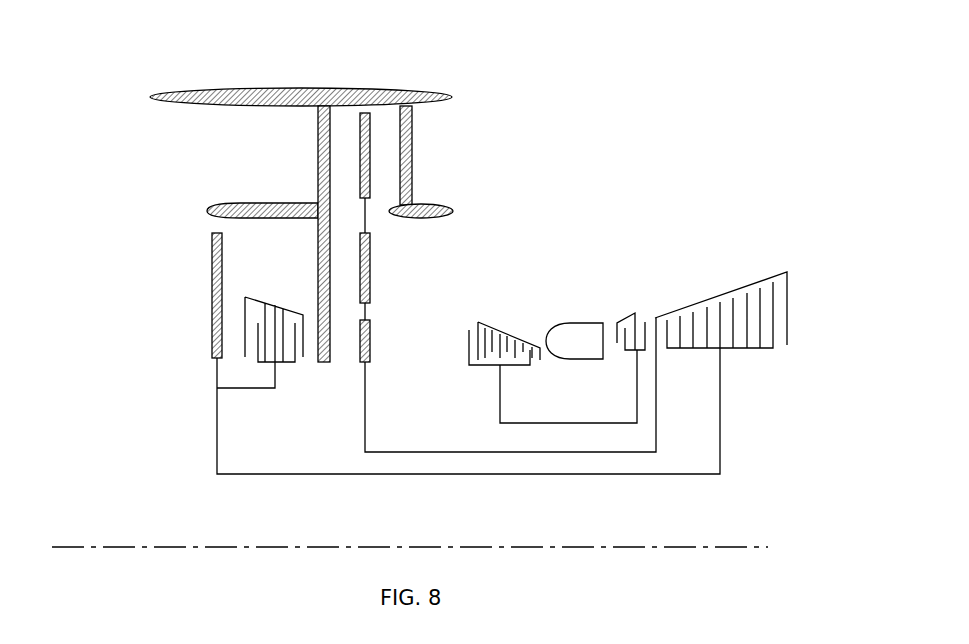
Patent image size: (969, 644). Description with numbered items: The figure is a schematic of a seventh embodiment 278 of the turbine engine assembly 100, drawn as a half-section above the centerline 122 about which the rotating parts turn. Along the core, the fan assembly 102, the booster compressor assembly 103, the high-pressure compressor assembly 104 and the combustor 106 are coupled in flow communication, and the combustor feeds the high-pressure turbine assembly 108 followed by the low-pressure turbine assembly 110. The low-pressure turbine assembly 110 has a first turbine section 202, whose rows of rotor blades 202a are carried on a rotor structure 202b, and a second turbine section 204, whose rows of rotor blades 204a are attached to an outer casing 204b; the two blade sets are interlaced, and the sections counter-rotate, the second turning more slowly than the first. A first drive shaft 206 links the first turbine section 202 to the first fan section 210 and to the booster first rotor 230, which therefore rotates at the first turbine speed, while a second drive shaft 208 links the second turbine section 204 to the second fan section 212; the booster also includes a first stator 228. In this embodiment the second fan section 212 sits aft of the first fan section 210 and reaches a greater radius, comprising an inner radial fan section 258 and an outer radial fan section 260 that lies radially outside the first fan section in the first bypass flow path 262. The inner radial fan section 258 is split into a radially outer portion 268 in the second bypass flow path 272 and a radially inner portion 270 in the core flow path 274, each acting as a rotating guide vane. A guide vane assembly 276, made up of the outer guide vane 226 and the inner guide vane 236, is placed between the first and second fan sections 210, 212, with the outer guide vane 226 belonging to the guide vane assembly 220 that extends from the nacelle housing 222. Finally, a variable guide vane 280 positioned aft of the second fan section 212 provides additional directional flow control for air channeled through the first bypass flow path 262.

The turbine engine assembly 100 is at (132, 60).
The fan assembly 102 is at (105, 196).
The booster compressor assembly 103 is at (255, 292).
The high-pressure compressor assembly 104 is at (503, 322).
The combustor 106 is at (588, 323).
The high-pressure turbine assembly 108 is at (630, 300).
The low-pressure turbine assembly 110 is at (705, 262).
The centerline 122 is at (707, 546).
The first turbine section 202 is at (749, 350).
The rotor blades 202a is at (773, 328).
The rotor structure 202b is at (773, 352).
The second turbine section 204 is at (762, 318).
The rotor blades 204a is at (762, 294).
The outer casing 204b is at (789, 270).
The first drive shaft 206 is at (630, 475).
The second drive shaft 208 is at (575, 452).
The first fan section 210 is at (212, 308).
The second fan section 212 is at (378, 140).
The guide vane assembly 220 is at (301, 67).
The nacelle housing 222 is at (225, 90).
The outer guide vane 226 is at (318, 172).
The first stator 228 is at (276, 305).
The first rotor 230 is at (288, 365).
The inner guide vane 236 is at (318, 262).
The inner radial fan section 258 is at (380, 262).
The outer radial fan section 260 is at (370, 180).
The first bypass flow path 262 is at (165, 152).
The radially outer portion 268 is at (370, 285).
The radially inner portion 270 is at (372, 340).
The second bypass flow path 272 is at (185, 268).
The core flow path 274 is at (200, 348).
The guide vane assembly 276 is at (305, 140).
The seventh embodiment 278 is at (585, 72).
The variable guide vane 280 is at (412, 148).